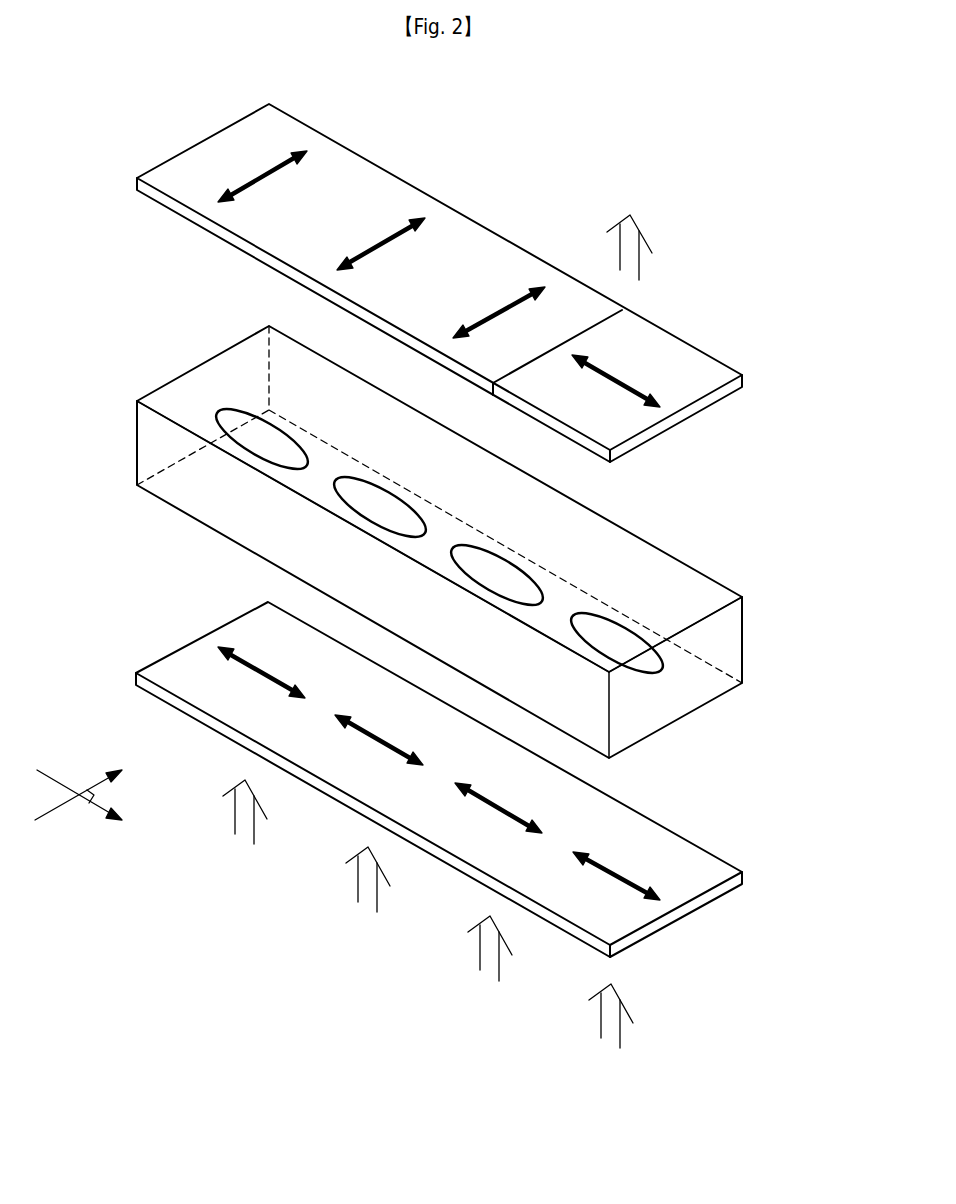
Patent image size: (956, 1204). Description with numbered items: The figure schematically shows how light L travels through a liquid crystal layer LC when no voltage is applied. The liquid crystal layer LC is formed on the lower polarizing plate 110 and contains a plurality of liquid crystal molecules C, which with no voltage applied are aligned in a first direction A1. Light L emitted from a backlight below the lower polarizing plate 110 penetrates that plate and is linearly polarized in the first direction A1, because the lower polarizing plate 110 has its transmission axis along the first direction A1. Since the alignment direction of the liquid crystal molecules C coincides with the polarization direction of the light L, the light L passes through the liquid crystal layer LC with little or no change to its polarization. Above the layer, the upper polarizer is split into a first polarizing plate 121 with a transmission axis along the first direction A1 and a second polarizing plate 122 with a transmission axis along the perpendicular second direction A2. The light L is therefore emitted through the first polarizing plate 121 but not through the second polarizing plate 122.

The lower polarizing plate 110 is at (677, 912).
The first polarizing plate 121 is at (683, 357).
The second polarizing plate 122 is at (467, 232).
The liquid crystal layer LC is at (735, 642).
The liquid crystal molecules C is at (653, 663).
The light L is at (428, 914).
The first direction A1 is at (94, 806).
The second direction A2 is at (93, 789).